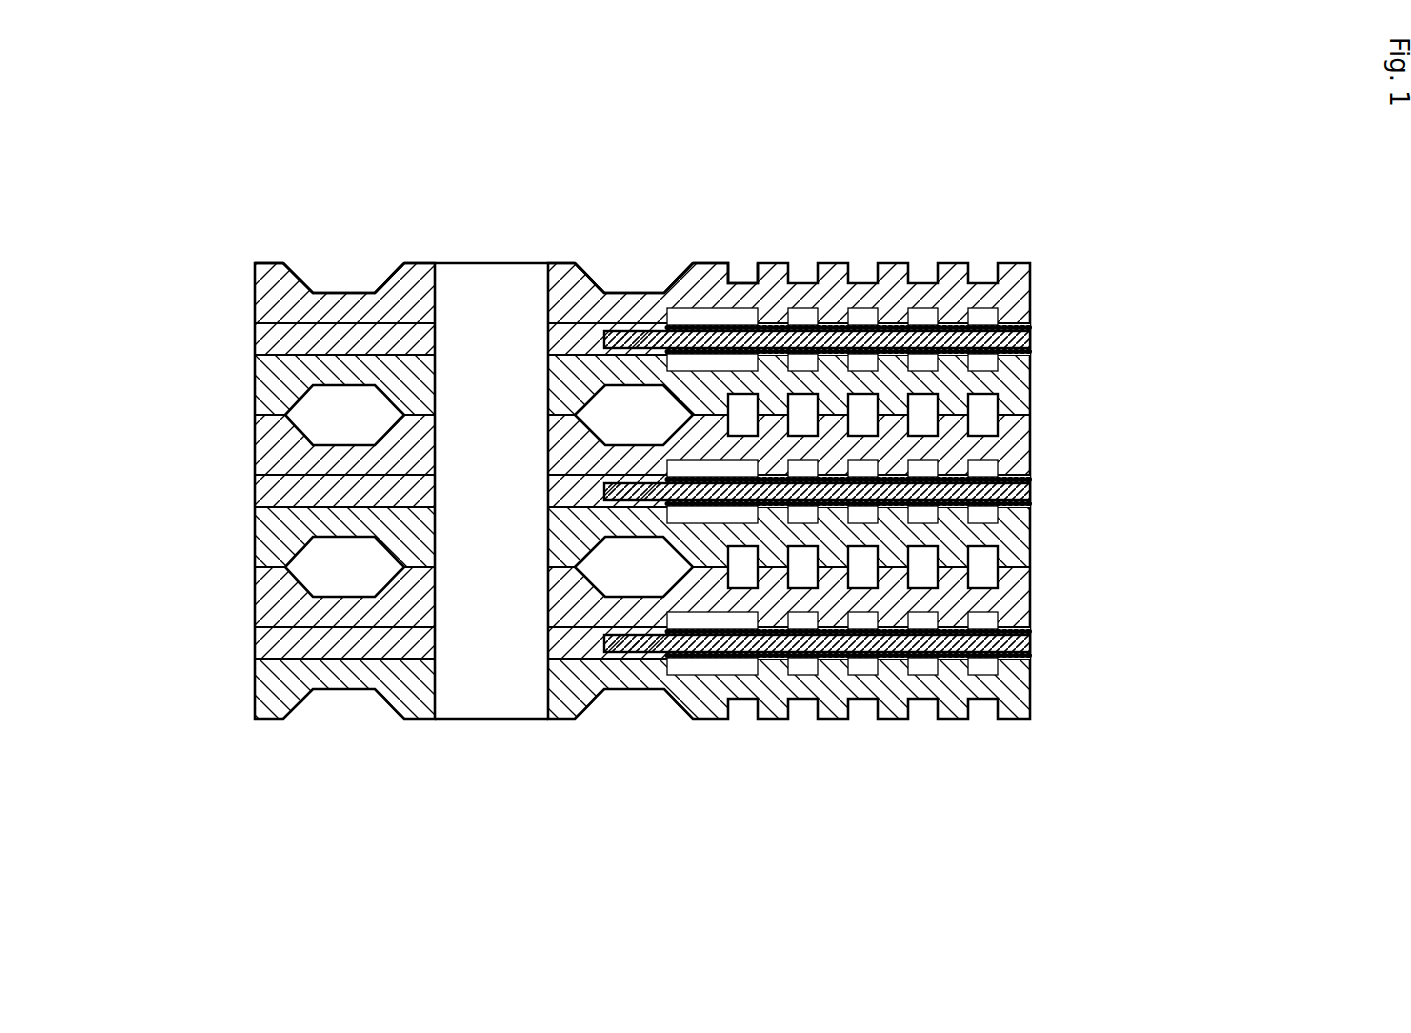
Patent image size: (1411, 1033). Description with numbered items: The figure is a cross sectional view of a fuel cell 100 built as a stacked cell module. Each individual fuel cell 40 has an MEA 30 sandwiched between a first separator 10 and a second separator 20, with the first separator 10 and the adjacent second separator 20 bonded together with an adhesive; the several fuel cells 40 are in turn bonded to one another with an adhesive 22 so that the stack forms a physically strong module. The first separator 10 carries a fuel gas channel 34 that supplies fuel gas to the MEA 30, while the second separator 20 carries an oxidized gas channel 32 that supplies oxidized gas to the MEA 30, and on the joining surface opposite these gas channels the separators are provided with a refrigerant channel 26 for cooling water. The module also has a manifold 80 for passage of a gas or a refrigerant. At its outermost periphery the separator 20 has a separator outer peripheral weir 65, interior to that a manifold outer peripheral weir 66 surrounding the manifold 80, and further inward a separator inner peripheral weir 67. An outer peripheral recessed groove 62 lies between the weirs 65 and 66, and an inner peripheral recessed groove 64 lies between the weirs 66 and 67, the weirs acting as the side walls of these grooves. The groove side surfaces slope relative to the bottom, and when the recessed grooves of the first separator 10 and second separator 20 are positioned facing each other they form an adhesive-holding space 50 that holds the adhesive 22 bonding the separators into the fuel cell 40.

The fuel cell 100 is at (912, 201).
The first separator 10 is at (255, 383).
The second separator 20 is at (255, 300).
The adhesive 22 is at (255, 338).
The refrigerant channel 26 is at (745, 405).
The MEA 30 is at (1040, 322).
The oxidized gas channel 32 is at (923, 622).
The fuel gas channel 34 is at (805, 667).
The fuel cell 40 is at (1125, 256).
The adhesive-holding space 50 is at (642, 385).
The outer peripheral recessed groove 62 is at (333, 270).
The inner peripheral recessed groove 64 is at (609, 268).
The separator outer peripheral weir 65 is at (267, 263).
The manifold outer peripheral weir 66 is at (413, 263).
The separator inner peripheral weir 67 is at (718, 266).
The manifold 80 is at (500, 719).